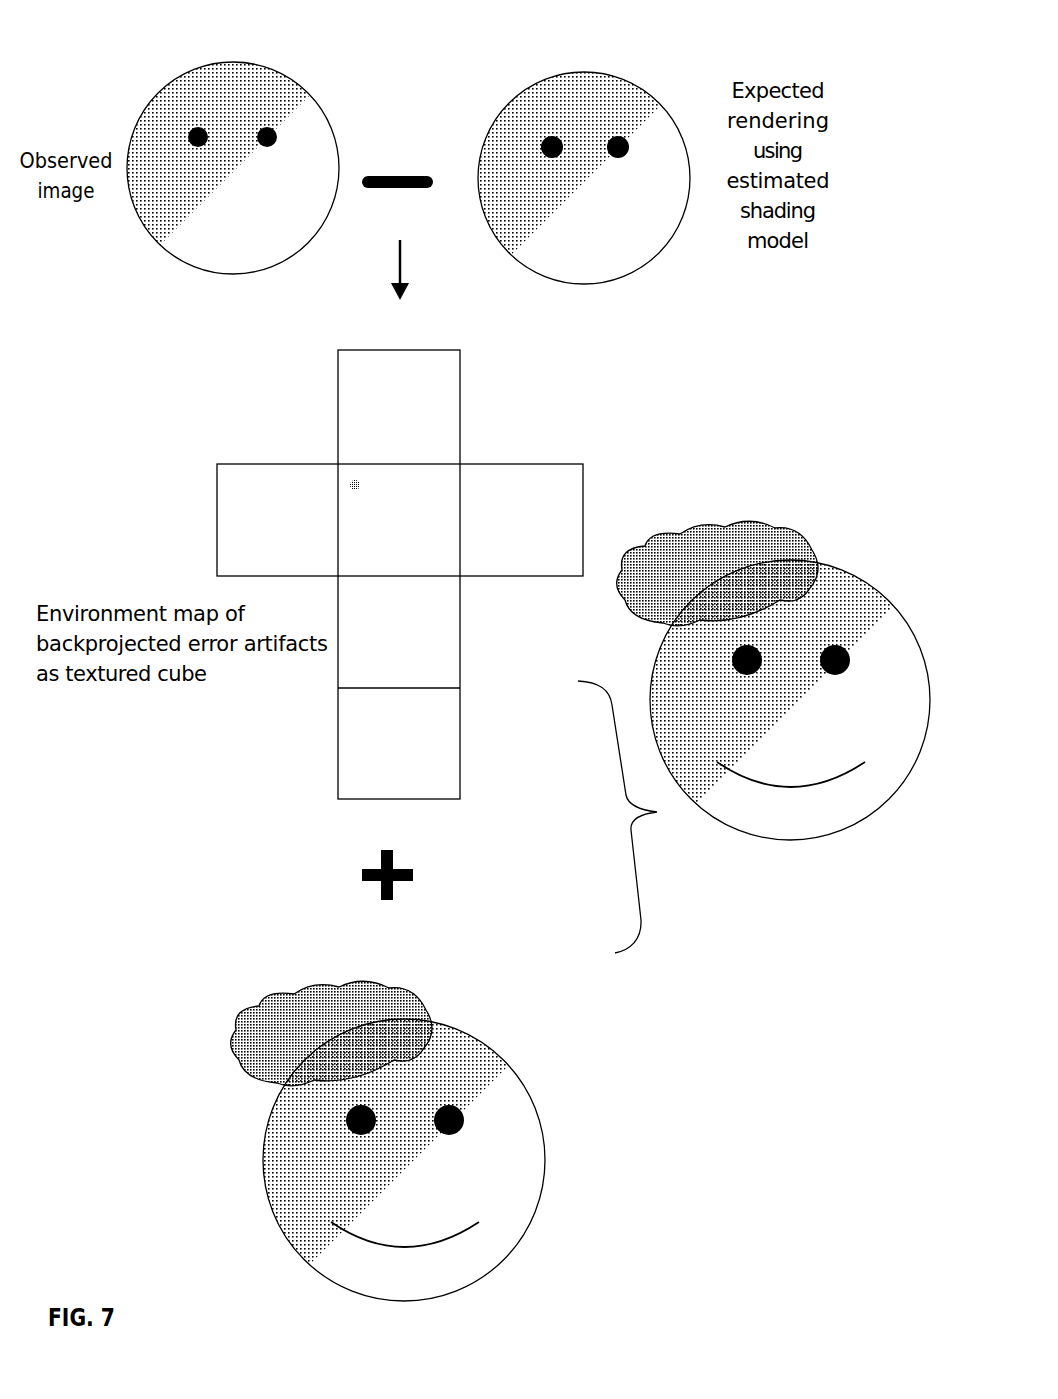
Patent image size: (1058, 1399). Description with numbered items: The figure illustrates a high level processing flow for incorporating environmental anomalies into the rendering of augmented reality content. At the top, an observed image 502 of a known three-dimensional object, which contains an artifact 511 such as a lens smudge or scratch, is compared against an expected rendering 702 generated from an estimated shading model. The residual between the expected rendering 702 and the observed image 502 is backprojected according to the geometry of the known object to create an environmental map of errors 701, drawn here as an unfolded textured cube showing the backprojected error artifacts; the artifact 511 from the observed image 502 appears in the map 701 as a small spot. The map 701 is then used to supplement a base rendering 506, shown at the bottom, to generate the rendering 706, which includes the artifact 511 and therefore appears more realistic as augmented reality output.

The observed image 502 is at (358, 28).
The artifact 511 is at (118, 32).
The expected rendering 702 is at (643, 88).
The environmental map of errors 701 is at (488, 408).
The rendering 706 is at (810, 506).
The rendering 506 is at (425, 965).